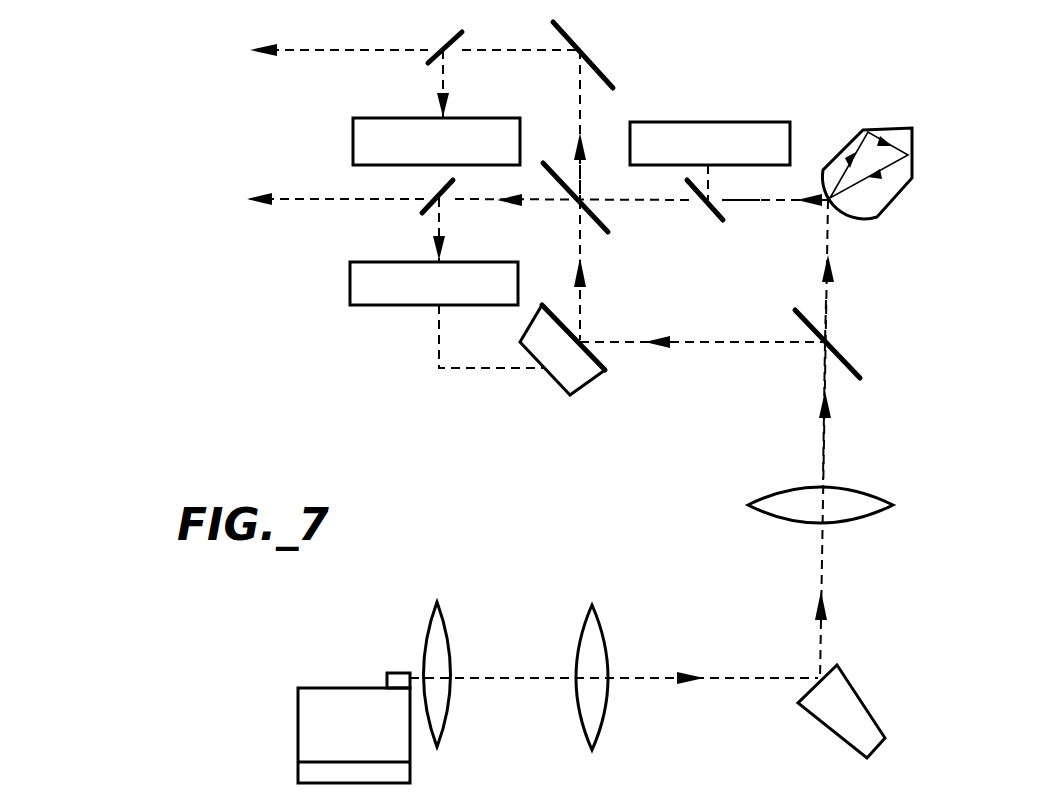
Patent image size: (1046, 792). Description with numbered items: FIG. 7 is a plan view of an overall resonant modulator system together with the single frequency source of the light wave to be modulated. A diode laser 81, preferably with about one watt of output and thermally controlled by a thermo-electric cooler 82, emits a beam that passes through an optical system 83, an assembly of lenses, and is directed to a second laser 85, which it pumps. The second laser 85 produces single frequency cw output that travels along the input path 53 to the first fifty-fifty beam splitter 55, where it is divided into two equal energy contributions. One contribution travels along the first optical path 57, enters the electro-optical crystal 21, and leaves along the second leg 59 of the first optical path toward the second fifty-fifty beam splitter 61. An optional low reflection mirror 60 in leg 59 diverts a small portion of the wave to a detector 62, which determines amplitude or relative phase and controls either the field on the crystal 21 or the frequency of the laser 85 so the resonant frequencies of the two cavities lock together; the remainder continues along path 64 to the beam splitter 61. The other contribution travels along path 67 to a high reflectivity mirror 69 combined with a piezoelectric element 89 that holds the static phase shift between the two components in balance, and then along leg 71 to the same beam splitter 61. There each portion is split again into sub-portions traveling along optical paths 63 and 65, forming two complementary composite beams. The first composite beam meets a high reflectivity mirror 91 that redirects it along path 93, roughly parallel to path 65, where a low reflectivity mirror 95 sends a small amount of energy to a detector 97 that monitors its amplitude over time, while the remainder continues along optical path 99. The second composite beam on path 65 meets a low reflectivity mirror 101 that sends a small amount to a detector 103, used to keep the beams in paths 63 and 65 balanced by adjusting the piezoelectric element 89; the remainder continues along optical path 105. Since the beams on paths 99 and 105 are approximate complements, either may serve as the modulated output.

The electro-optical crystal 21 is at (905, 183).
The input path 53 is at (828, 433).
The first 50/50 beam splitter 55 is at (840, 352).
The first optical path 57 is at (828, 303).
The second leg of the first optical path 59 is at (726, 205).
The low reflection mirror 60 is at (706, 205).
The second 50/50 beam splitter 61 is at (594, 216).
The detector 62 is at (709, 122).
The optical path 63 is at (582, 96).
The path 64 is at (590, 197).
The optical path 65 is at (566, 205).
The path of the second optical path 67 is at (603, 345).
The high reflectivity mirror 69 is at (600, 372).
The leg of the second optical path 71 is at (581, 320).
The diode laser 81 is at (298, 716).
The thermo-electric cooler 82 is at (305, 773).
The optical system 83 is at (587, 640).
The second laser 85 is at (853, 710).
The piezoelectric element 89 is at (553, 375).
The high reflectivity mirror 91 is at (612, 75).
The path 93 is at (477, 50).
The low reflectivity mirror 95 is at (428, 62).
The detector 97 is at (481, 118).
The optical path 99 is at (370, 48).
The low reflectivity mirror 101 is at (454, 182).
The detector 103 is at (350, 279).
The optical path 105 is at (360, 203).